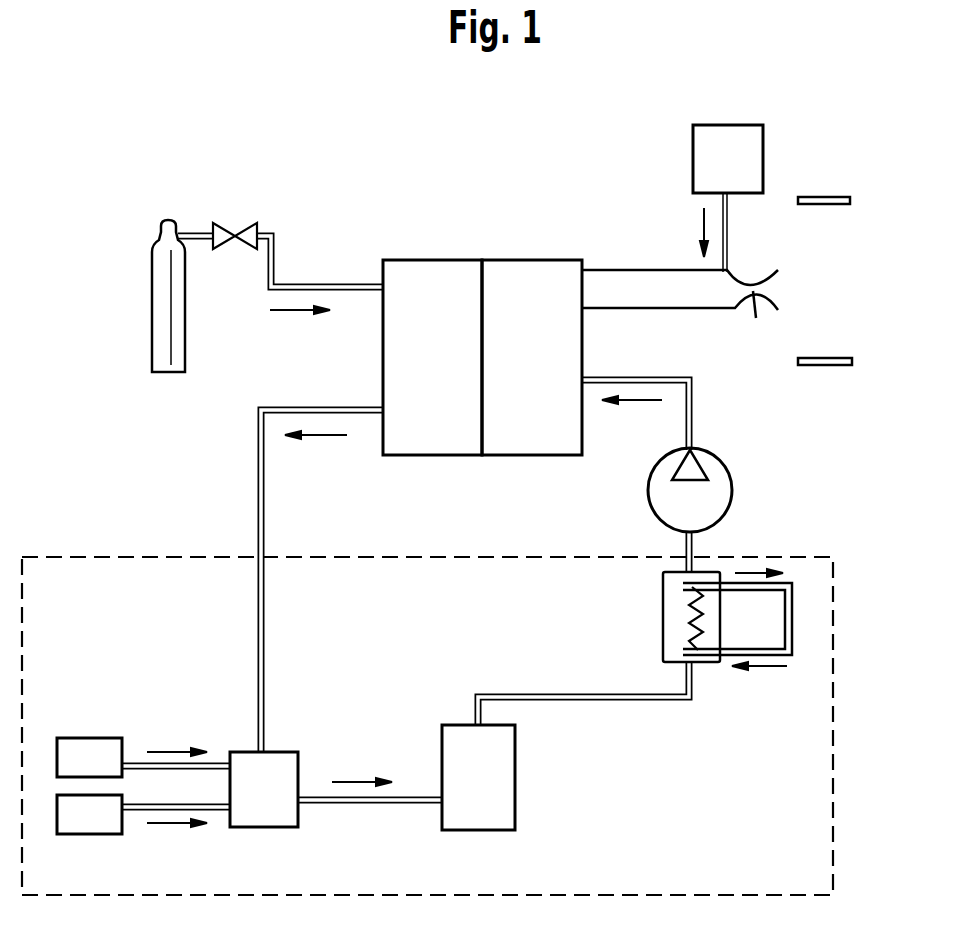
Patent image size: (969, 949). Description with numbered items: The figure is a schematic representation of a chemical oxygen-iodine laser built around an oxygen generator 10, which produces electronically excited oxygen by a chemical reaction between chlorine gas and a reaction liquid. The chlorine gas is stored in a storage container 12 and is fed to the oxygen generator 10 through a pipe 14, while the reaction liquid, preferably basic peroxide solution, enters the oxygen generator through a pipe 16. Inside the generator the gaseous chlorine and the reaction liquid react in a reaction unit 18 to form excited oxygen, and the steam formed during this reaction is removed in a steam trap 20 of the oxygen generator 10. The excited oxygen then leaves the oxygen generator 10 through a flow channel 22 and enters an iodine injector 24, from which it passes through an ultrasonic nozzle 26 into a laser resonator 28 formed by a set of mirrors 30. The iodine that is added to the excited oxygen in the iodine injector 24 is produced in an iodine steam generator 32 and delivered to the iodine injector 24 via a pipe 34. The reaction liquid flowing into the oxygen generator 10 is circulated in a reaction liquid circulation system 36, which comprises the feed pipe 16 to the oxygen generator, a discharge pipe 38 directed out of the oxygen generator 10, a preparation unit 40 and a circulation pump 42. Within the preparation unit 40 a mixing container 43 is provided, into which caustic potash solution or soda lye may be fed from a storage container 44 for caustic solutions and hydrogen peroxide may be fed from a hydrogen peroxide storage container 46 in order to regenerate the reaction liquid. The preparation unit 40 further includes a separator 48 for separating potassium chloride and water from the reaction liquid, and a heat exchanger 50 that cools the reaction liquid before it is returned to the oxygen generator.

The oxygen generator 10 is at (482, 321).
The storage container 12 is at (155, 258).
The pipe 14 is at (312, 285).
The pipe 16 is at (693, 408).
The reaction unit 18 is at (435, 449).
The steam trap 20 is at (512, 262).
The flow channel 22 is at (609, 285).
The iodine injector 24 is at (722, 298).
The ultrasonic nozzle 26 is at (756, 325).
The laser resonator 28 is at (835, 283).
The set of mirrors 30 is at (820, 197).
The iodine steam generator 32 is at (718, 135).
The pipe 34 is at (728, 232).
The reaction liquid circulation system 36 is at (250, 506).
The discharge pipe 38 is at (265, 486).
The preparation unit 40 is at (830, 784).
The circulation pump 42 is at (722, 495).
The mixing container 43 is at (285, 760).
The storage container for caustic solutions 44 is at (85, 745).
The hydrogen peroxide storage container 46 is at (110, 825).
The separator 48 is at (512, 808).
The heat exchanger 50 is at (668, 610).